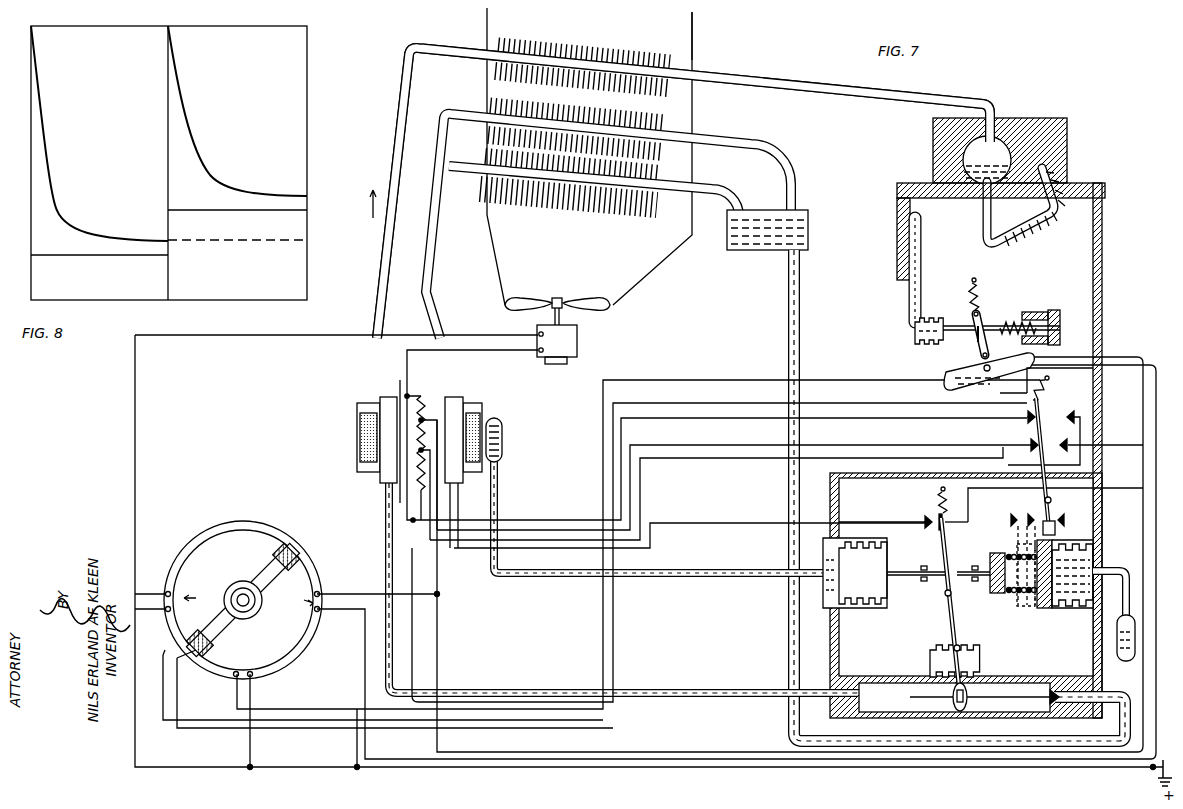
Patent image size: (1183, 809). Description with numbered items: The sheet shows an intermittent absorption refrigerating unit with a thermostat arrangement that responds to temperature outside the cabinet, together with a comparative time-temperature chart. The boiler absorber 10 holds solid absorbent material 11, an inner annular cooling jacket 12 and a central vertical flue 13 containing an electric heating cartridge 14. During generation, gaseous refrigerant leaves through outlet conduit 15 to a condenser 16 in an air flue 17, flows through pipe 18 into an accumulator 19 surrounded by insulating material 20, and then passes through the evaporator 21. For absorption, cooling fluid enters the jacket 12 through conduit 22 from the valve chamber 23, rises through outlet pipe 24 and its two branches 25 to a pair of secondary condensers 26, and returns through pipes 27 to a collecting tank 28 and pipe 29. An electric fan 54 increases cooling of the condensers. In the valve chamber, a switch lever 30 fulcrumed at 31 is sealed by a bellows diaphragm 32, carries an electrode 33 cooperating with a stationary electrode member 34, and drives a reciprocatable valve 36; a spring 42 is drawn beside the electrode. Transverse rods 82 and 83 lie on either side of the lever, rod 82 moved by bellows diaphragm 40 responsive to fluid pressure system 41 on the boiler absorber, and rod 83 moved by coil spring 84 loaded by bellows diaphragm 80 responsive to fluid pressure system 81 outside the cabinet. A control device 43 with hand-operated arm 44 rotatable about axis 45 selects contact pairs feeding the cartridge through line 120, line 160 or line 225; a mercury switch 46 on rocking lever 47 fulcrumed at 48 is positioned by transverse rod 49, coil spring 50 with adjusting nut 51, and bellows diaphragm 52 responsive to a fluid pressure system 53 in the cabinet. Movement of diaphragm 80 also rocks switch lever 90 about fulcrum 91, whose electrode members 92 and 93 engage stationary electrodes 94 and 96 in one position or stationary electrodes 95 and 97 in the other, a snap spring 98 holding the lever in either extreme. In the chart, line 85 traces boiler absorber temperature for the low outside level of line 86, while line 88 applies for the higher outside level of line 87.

In FIG. 7, the boiler absorber 10 is at (413, 459).
In FIG. 7, the solid absorbent material 11 is at (357, 441).
In FIG. 7, the inner annular cooling jacket 12 is at (380, 482).
In FIG. 7, the central vertical flue 13 is at (400, 392).
In FIG. 7, the electric heating cartridge 14 is at (420, 395).
In FIG. 7, the outlet conduit 15 is at (373, 296).
In FIG. 7, the condenser 16 is at (586, 156).
In FIG. 7, the air flue 17 is at (692, 62).
In FIG. 7, the pipe 18 is at (805, 78).
In FIG. 7, the accumulator 19 is at (963, 158).
In FIG. 7, the insulating material 20 is at (1070, 134).
In FIG. 7, the evaporator 21 is at (1034, 247).
In FIG. 7, the conduit 22 is at (704, 690).
In FIG. 7, the valve chamber 23 is at (839, 623).
In FIG. 7, the outlet pipe 24 is at (432, 285).
In FIG. 7, the branches 25 is at (454, 111).
In FIG. 7, the secondary condensers 26 is at (605, 106).
In FIG. 7, the pipes 27 is at (746, 146).
In FIG. 7, the collecting tank 28 is at (808, 233).
In FIG. 7, the pipe 29 is at (788, 626).
In FIG. 7, the switch lever 30 is at (958, 611).
In FIG. 7, the fulcrum 31 is at (945, 598).
In FIG. 7, the bellows diaphragm 32 is at (982, 659).
In FIG. 7, the electrode 33 is at (946, 518).
In FIG. 7, the stationary electrode member 34 is at (924, 522).
In FIG. 7, the reciprocatable valve 36 is at (1050, 703).
In FIG. 7, the bellows diaphragm 40 is at (835, 561).
In FIG. 7, the fluid pressure system 41 is at (500, 450).
In FIG. 7, the spring 42 is at (939, 506).
In FIG. 7, the control device 43 is at (234, 608).
In FIG. 7, the hand-operated arm 44 is at (270, 580).
In FIG. 7, the central axis 45 is at (241, 590).
In FIG. 7, the mercury switch 46 is at (1013, 373).
In FIG. 7, the rocking lever 47 is at (987, 345).
In FIG. 7, the fulcrum 48 is at (1001, 340).
In FIG. 7, the transverse rod 49 is at (987, 310).
In FIG. 7, the coil spring 50 is at (1022, 318).
In FIG. 7, the adjusting nut 51 is at (1056, 310).
In FIG. 7, the bellows diaphragm 52 is at (932, 318).
In FIG. 7, the fluid pressure system 53 is at (922, 248).
In FIG. 7, the electric fan 54 is at (578, 340).
In FIG. 7, the bellows diaphragm 80 is at (1083, 608).
In FIG. 7, the fluid pressure system 81 is at (1126, 661).
In FIG. 7, the transverse rod 82 is at (900, 570).
In FIG. 7, the transverse rod 83 is at (959, 570).
In FIG. 7, the coil spring 84 is at (1008, 596).
In FIG. 8, the line 85 is at (50, 145).
In FIG. 7, the line 85 is at (993, 552).
In FIG. 8, the line 86 is at (62, 257).
In FIG. 8, the line 87 is at (228, 212).
In FIG. 8, the line 88 is at (194, 118).
In FIG. 7, the switch lever 90 is at (1052, 517).
In FIG. 7, the fulcrum 91 is at (1051, 500).
In FIG. 7, the electrode member 92 is at (1035, 414).
In FIG. 7, the electrode member 93 is at (1056, 438).
In FIG. 7, the stationary electrode 94 is at (1024, 419).
In FIG. 7, the stationary electrode 95 is at (1073, 412).
In FIG. 7, the stationary electrode 96 is at (1030, 445).
In FIG. 7, the stationary electrode 97 is at (1052, 443).
In FIG. 7, the snap spring 98 is at (1049, 380).
In FIG. 7, the feed line 120 is at (212, 737).
In FIG. 7, the feed line 160 is at (940, 437).
In FIG. 7, the feed line 225 is at (1142, 446).